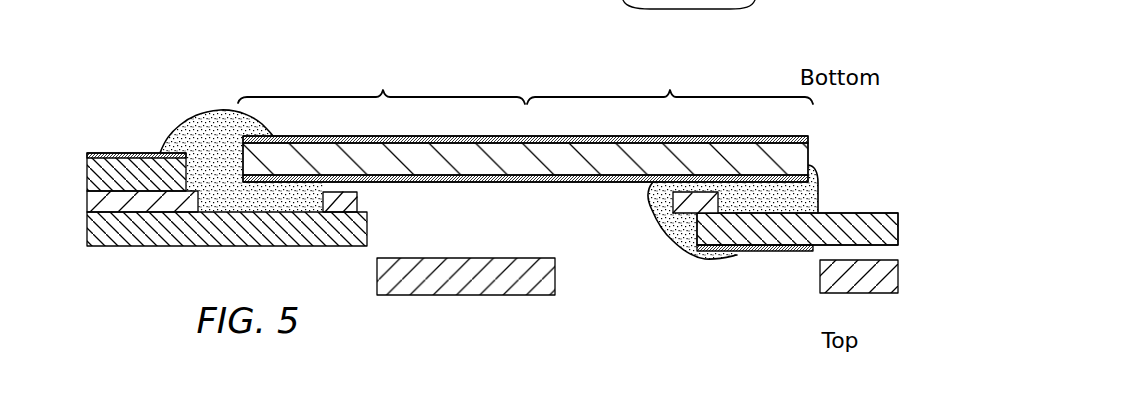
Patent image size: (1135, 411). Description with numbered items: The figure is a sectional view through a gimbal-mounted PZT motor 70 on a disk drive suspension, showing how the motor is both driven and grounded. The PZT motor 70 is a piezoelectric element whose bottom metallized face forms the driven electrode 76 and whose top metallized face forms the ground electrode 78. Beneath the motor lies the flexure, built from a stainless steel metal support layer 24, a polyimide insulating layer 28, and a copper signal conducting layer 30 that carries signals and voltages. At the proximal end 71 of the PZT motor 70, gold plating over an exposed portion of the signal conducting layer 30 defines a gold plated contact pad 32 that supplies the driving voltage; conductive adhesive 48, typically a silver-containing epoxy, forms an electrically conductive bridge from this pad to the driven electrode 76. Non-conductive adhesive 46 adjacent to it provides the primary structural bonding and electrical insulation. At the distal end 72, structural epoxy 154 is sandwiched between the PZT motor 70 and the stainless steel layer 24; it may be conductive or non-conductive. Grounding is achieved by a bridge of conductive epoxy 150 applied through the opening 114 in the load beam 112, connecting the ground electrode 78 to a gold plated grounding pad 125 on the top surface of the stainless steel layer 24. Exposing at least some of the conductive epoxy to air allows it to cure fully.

The PZT motor 70 is at (307, 72).
The conductive adhesive 48 is at (206, 114).
The non-conductive adhesive 46 is at (277, 200).
The signal conducting layer 30 is at (98, 168).
The gold plated contact pad 32 is at (126, 153).
The insulating layer 28 is at (103, 203).
The metal support layer 24 is at (123, 232).
The conductive epoxy 150 is at (650, 207).
The structural epoxy 154 is at (828, 192).
The gold plated grounding pad 125 is at (770, 252).
The driven electrode 76 is at (572, 136).
The ground electrode 78 is at (480, 183).
The proximal end 71 is at (381, 83).
The distal end 72 is at (670, 83).
The load beam 112 is at (480, 295).
The opening 114 is at (611, 227).